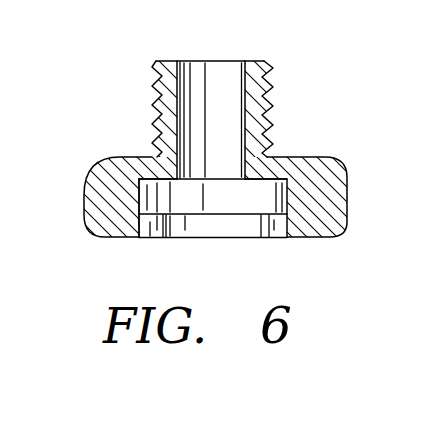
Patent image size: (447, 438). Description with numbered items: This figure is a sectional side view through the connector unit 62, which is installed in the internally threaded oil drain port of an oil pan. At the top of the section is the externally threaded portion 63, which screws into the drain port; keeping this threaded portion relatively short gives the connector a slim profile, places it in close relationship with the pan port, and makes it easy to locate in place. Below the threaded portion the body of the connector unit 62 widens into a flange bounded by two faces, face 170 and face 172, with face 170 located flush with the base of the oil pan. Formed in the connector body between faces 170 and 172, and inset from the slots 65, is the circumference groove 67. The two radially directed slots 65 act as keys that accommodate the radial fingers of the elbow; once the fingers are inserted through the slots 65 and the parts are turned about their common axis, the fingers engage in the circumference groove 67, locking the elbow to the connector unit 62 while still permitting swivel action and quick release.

The connector unit 62 is at (108, 123).
The externally threaded portion 63 is at (152, 88).
The slots 65 is at (153, 237).
The circumference groove 67 is at (145, 200).
The face 170 is at (300, 157).
The face 172 is at (300, 238).